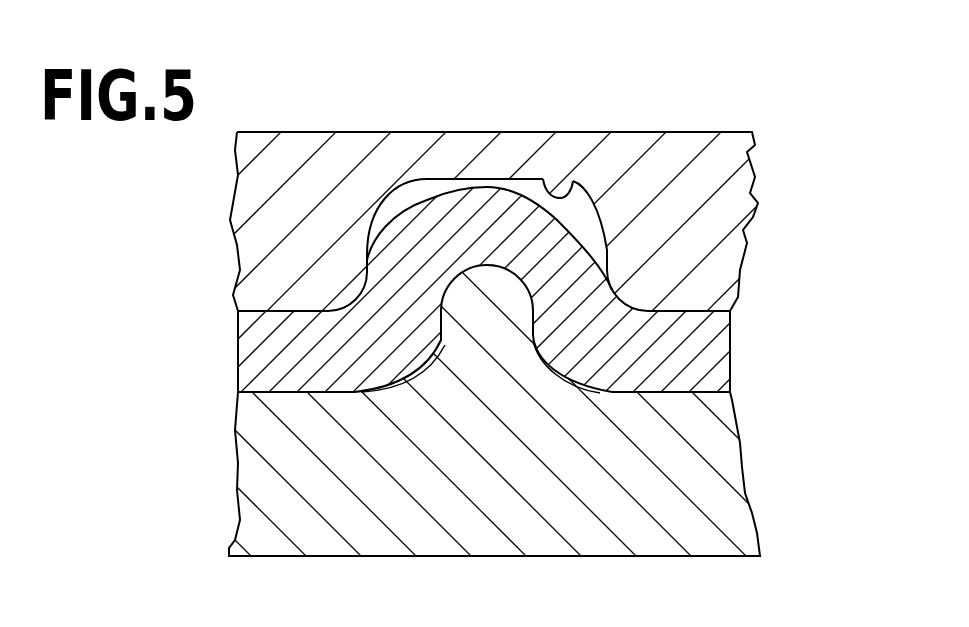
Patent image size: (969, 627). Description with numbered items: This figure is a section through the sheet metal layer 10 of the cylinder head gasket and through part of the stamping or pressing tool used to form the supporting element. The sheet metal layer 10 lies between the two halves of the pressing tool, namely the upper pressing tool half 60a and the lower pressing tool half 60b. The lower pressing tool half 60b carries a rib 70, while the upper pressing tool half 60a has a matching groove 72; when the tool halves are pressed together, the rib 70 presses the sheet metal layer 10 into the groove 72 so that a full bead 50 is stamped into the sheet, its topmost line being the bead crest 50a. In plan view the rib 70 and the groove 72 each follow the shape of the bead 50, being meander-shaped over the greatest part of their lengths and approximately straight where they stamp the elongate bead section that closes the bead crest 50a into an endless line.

The sheet metal layer 10 is at (723, 367).
The bead 50 is at (385, 190).
The bead crest 50a is at (487, 188).
The upper pressing tool half 60a is at (727, 210).
The lower pressing tool half 60b is at (723, 453).
The rib 70 is at (493, 290).
The groove 72 is at (570, 178).